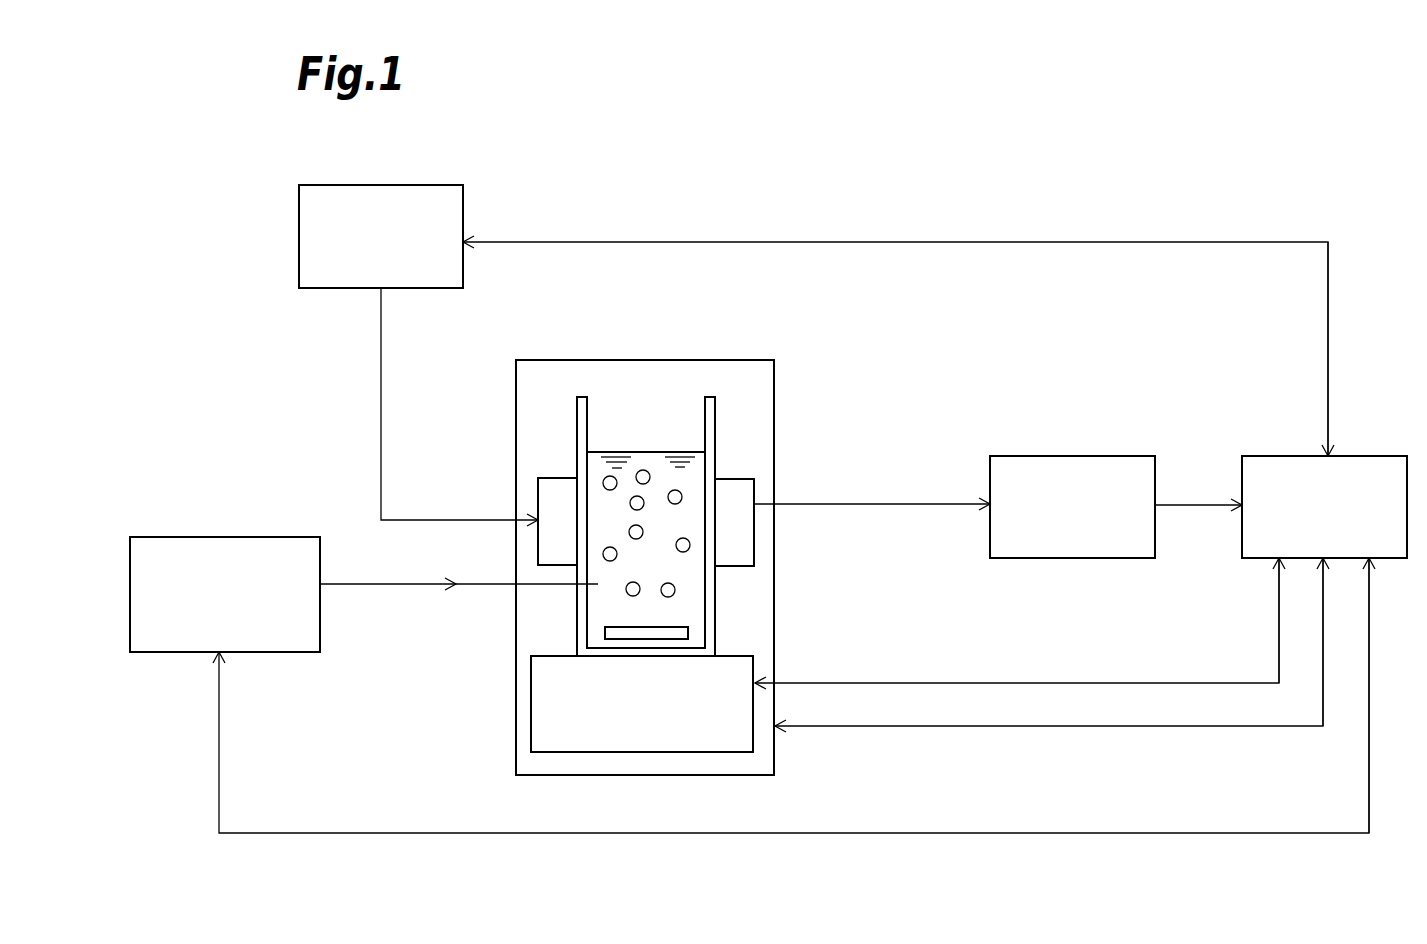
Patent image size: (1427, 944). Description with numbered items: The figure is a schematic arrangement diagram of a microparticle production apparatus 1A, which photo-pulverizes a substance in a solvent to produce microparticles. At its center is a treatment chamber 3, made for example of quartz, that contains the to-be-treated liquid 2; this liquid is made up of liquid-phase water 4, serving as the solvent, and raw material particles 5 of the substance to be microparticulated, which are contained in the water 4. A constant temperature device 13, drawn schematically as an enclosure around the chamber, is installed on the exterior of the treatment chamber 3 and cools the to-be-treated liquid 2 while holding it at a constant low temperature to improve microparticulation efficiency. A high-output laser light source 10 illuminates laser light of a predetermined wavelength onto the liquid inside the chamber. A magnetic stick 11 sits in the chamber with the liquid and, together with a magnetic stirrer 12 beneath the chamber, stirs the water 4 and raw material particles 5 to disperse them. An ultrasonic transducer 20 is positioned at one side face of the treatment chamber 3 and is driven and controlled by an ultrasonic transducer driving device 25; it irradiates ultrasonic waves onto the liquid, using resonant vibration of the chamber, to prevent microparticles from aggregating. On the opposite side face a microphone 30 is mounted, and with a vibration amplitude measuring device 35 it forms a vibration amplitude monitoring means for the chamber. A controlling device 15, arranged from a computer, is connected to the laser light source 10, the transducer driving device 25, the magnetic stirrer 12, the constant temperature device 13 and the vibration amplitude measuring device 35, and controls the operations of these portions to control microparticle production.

The microparticle production apparatus 1A is at (704, 214).
The to-be-treated liquid 2 is at (590, 293).
The treatment chamber 3 is at (715, 430).
The water 4 is at (592, 462).
The raw material particles 5 is at (643, 469).
The laser light source 10 is at (200, 537).
The magnetic stick 11 is at (605, 637).
The magnetic stirrer 12 is at (531, 712).
The constant temperature device 13 is at (760, 360).
The controlling device 15 is at (1388, 456).
The ultrasonic transducer 20 is at (557, 478).
The ultrasonic transducer driving device 25 is at (318, 289).
The microphone 30 is at (735, 567).
The vibration amplitude measuring device 35 is at (1126, 456).